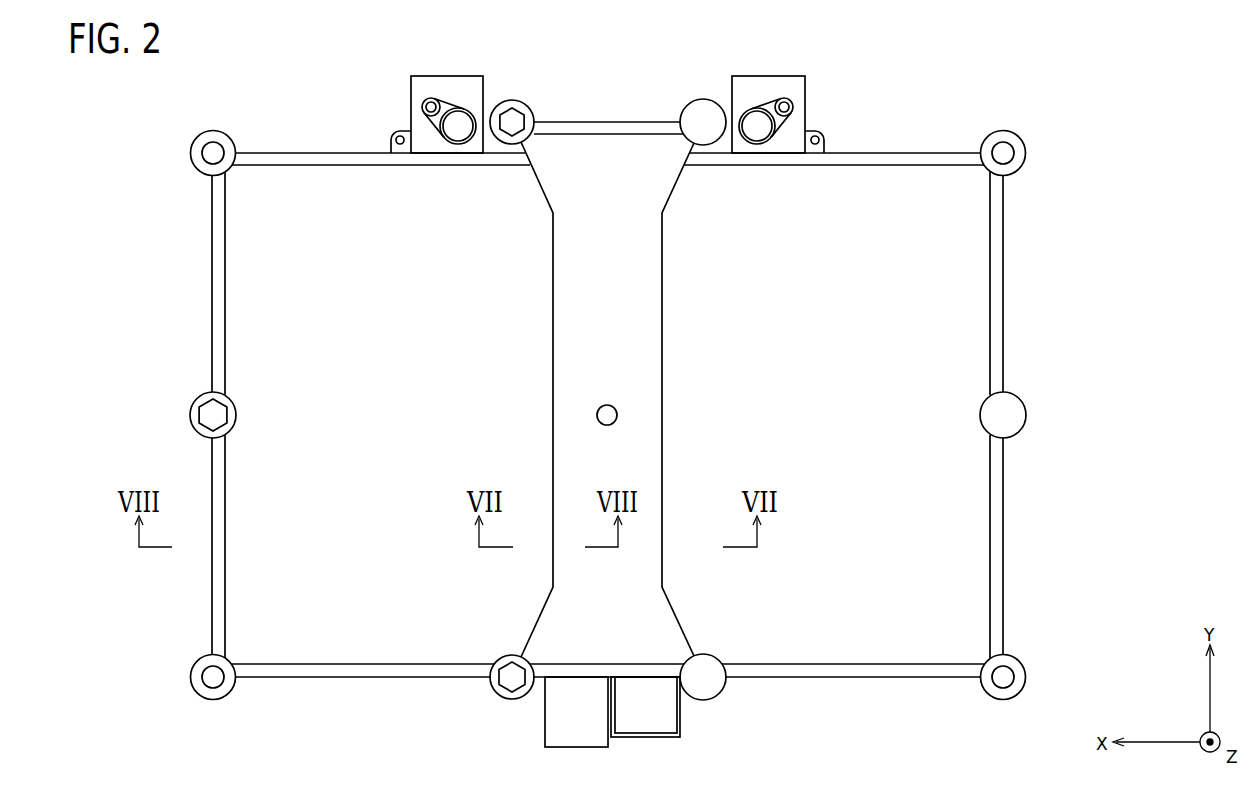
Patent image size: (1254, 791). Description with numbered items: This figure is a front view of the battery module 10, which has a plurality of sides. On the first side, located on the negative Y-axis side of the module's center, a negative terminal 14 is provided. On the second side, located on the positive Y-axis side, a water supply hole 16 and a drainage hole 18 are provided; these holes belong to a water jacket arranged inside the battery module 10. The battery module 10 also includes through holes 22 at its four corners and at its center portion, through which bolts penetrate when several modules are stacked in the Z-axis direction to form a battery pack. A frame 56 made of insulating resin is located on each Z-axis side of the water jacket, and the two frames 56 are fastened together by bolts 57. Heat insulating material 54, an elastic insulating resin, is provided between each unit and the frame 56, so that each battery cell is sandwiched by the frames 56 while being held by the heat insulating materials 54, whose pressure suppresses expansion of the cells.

The battery module 10 is at (1121, 74).
The negative terminal 14 is at (645, 678).
The water supply hole 16 is at (459, 124).
The drainage hole 18 is at (757, 126).
The through holes 22 is at (211, 153).
The heat insulating material 54 is at (362, 653).
The frame 56 is at (562, 615).
The bolts 57 is at (511, 116).